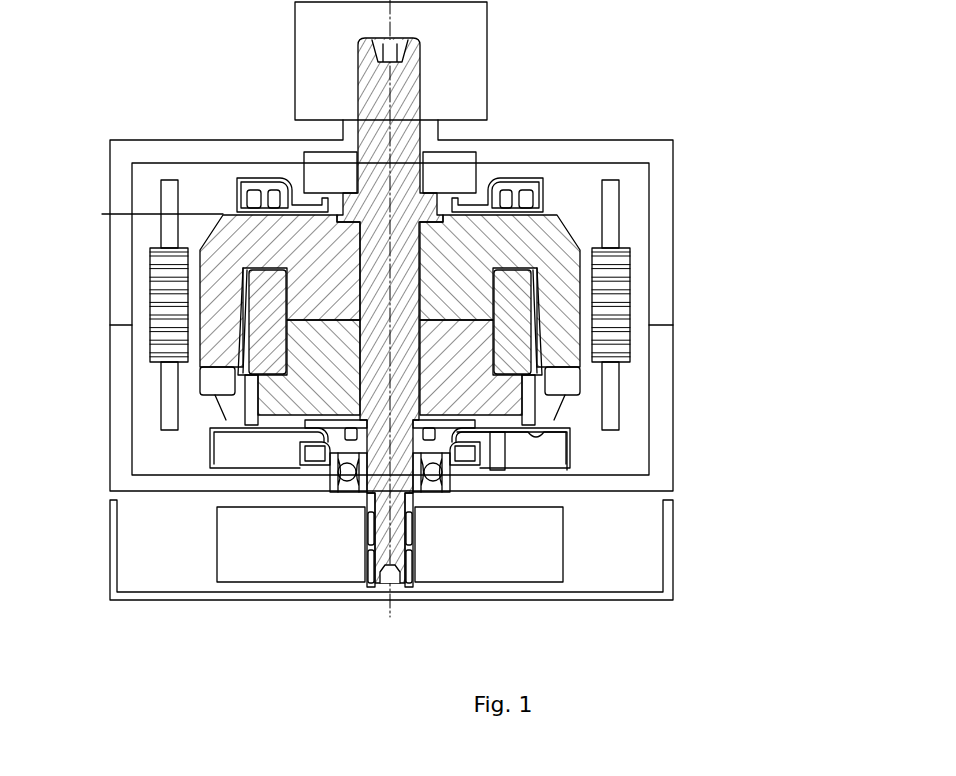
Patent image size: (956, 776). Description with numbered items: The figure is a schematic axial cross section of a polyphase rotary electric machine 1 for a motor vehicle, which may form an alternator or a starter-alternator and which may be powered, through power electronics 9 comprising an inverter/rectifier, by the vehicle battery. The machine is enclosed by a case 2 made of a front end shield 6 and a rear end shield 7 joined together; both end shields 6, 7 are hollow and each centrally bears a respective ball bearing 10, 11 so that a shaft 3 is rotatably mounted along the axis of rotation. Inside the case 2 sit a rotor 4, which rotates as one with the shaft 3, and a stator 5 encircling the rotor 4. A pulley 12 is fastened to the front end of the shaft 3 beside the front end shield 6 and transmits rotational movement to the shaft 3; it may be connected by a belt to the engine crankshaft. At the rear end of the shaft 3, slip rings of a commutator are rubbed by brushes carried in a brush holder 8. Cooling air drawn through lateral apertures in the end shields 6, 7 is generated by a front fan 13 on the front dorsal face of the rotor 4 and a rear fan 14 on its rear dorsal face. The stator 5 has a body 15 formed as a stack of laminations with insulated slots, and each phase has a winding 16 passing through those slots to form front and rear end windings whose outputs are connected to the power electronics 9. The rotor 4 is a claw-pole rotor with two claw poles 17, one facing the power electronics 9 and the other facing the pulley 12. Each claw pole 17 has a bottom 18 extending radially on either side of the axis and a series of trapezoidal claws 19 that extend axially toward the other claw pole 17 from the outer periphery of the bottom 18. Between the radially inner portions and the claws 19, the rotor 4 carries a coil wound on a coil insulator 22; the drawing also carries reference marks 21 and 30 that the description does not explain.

The polyphase rotary electric machine 1 is at (635, 85).
The case 2 is at (63, 295).
The shaft 3 is at (400, 78).
The rotor 4 is at (572, 205).
The stator 5 is at (641, 242).
The front end shield 6 is at (125, 298).
The rear end shield 7 is at (122, 345).
The brush holder 8 is at (358, 550).
The power electronics 9 is at (547, 548).
The ball bearing 10 is at (458, 157).
The ball bearing 11 is at (445, 493).
The pulley 12 is at (455, 27).
The front fan 13 is at (294, 205).
The rear fan 14 is at (245, 432).
The body 15 is at (572, 290).
The winding 16 is at (608, 393).
The claw pole 17 is at (196, 237).
The bottom 18 is at (266, 236).
The claws 19 is at (627, 340).
The magnet pocket 21 is at (540, 327).
The coil insulator 22 is at (522, 302).
The fastening element 30 is at (570, 449).